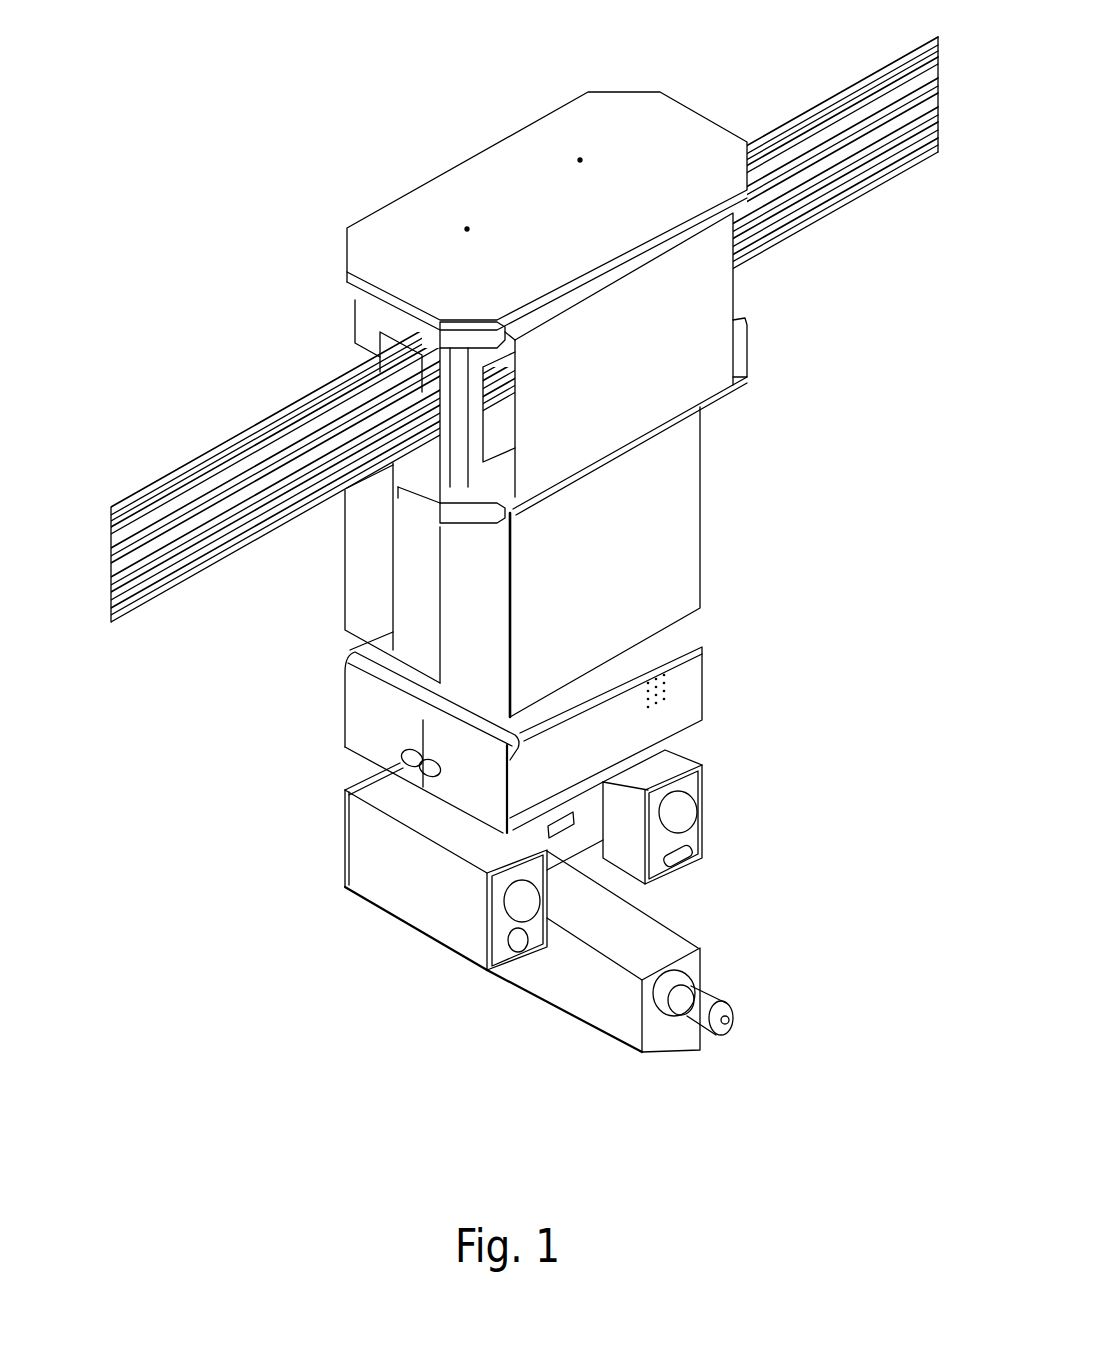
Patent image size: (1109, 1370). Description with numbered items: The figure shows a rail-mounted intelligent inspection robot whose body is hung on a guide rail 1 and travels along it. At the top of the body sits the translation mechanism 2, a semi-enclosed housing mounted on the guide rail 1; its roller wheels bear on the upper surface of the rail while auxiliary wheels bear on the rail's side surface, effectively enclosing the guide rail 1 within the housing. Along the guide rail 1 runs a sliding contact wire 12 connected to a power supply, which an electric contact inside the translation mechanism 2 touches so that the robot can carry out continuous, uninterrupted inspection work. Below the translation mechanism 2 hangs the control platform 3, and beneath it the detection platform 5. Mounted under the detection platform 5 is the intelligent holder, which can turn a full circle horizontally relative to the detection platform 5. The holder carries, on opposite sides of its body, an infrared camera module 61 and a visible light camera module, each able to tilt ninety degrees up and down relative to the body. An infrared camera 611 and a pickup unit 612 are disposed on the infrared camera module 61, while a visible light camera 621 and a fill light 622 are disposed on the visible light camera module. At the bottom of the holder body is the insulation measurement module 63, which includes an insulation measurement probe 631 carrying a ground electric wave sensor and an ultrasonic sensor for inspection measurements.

The guide rail 1 is at (524, 343).
The sliding contact wire 12 is at (302, 503).
The translation mechanism 2 is at (699, 324).
The control platform 3 is at (675, 529).
The detection platform 5 is at (692, 699).
The infrared camera module 61 is at (374, 905).
The infrared camera 611 is at (520, 899).
The pickup unit 612 is at (518, 941).
The visible light camera 621 is at (749, 813).
The fill light 622 is at (692, 849).
The insulation measurement module 63 is at (691, 951).
The insulation measurement probe 631 is at (712, 1003).